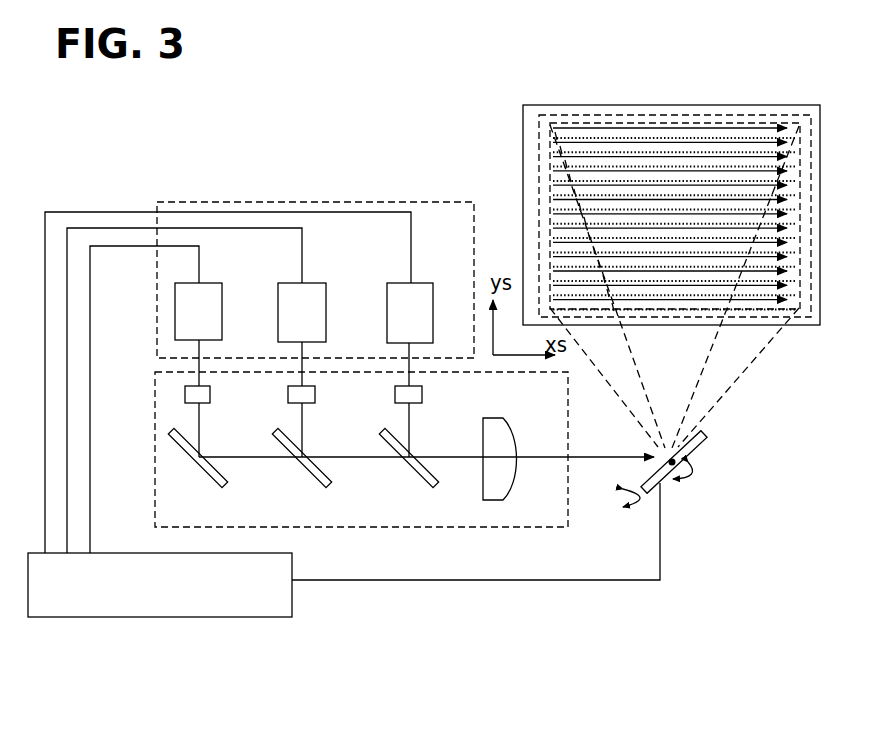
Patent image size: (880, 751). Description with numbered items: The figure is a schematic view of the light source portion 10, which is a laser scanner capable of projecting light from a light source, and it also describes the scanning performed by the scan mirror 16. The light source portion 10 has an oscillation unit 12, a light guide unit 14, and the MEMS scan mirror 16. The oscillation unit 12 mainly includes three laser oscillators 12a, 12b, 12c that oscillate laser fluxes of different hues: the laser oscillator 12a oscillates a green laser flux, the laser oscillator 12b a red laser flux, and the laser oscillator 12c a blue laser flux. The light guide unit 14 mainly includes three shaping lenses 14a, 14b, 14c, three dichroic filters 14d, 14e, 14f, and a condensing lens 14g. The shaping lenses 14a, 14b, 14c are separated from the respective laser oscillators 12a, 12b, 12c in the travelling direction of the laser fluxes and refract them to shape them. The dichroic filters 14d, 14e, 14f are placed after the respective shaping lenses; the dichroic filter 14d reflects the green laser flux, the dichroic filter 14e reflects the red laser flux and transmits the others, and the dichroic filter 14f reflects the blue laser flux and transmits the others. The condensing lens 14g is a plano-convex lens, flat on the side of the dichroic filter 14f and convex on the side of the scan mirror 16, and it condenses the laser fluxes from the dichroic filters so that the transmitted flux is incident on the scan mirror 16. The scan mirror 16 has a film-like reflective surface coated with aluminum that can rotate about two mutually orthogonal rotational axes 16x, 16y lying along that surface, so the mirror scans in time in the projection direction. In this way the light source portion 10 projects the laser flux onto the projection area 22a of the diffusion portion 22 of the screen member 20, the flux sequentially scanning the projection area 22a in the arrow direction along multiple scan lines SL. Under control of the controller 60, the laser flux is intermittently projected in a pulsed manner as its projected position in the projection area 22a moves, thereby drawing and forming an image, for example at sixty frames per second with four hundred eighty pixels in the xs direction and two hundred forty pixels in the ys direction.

The light source portion 10 is at (126, 185).
The oscillation unit 12 is at (157, 298).
The laser oscillator 12a is at (222, 313).
The laser oscillator 12b is at (326, 313).
The laser oscillator 12c is at (427, 283).
The light guide unit 14 is at (155, 400).
The shaping lens 14a is at (210, 395).
The shaping lens 14b is at (315, 395).
The shaping lens 14c is at (422, 395).
The dichroic filter 14d is at (204, 468).
The dichroic filter 14e is at (308, 468).
The dichroic filter 14f is at (413, 468).
The condensing lens 14g is at (493, 418).
The scan mirror 16 is at (697, 449).
The rotational axis 16x is at (683, 476).
The rotational axis 16y is at (635, 515).
The screen member 20 is at (712, 105).
The diffusion portion 22 is at (632, 112).
The projection area 22a is at (585, 110).
The scan lines SL is at (674, 219).
The controller 60 is at (293, 567).